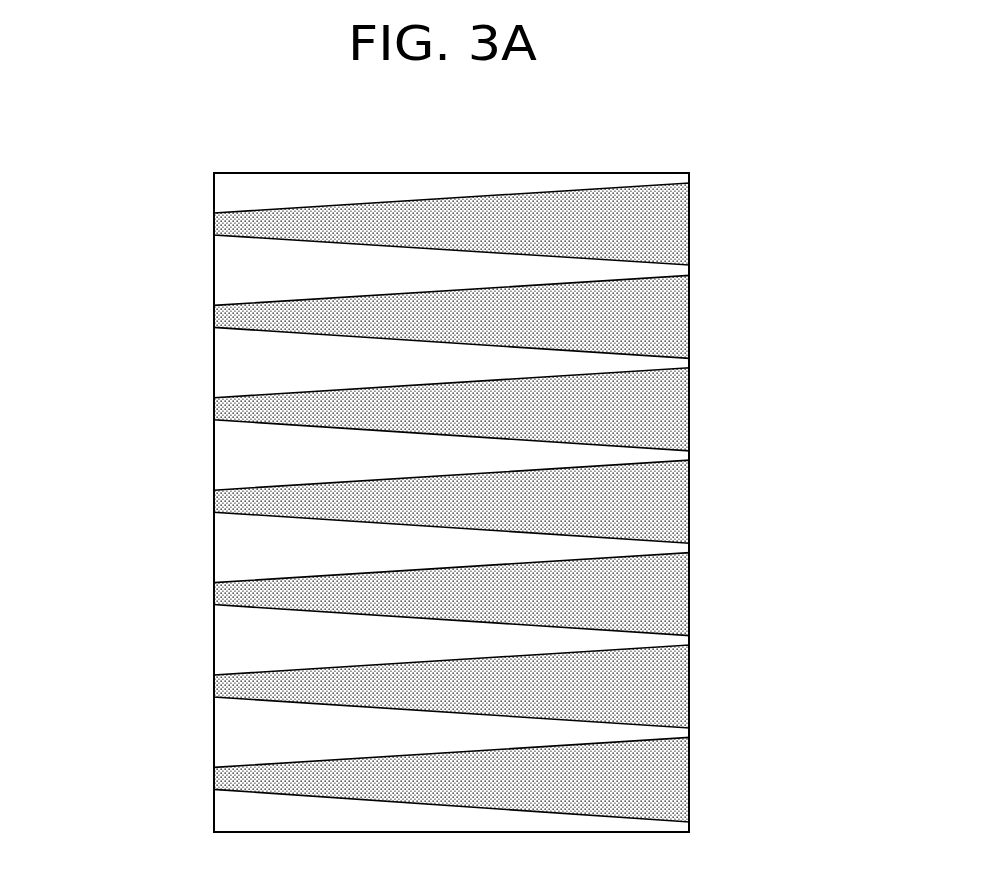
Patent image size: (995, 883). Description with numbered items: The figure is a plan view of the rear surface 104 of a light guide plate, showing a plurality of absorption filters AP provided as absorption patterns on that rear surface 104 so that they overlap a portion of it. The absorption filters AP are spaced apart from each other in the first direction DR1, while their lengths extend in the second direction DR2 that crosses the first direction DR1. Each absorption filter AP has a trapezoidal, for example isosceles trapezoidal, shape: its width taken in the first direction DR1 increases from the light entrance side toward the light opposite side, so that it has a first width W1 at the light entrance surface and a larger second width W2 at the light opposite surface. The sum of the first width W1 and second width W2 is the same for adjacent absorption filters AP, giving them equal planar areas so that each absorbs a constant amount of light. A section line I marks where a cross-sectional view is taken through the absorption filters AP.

The rear surface 104 is at (230, 360).
The absorption filter AP is at (673, 409).
The first width W1 is at (199, 283).
The second width W2 is at (692, 275).
The section line I-I' I is at (410, 363).
The first direction DR1 is at (55, 830).
The second direction DR2 is at (55, 830).